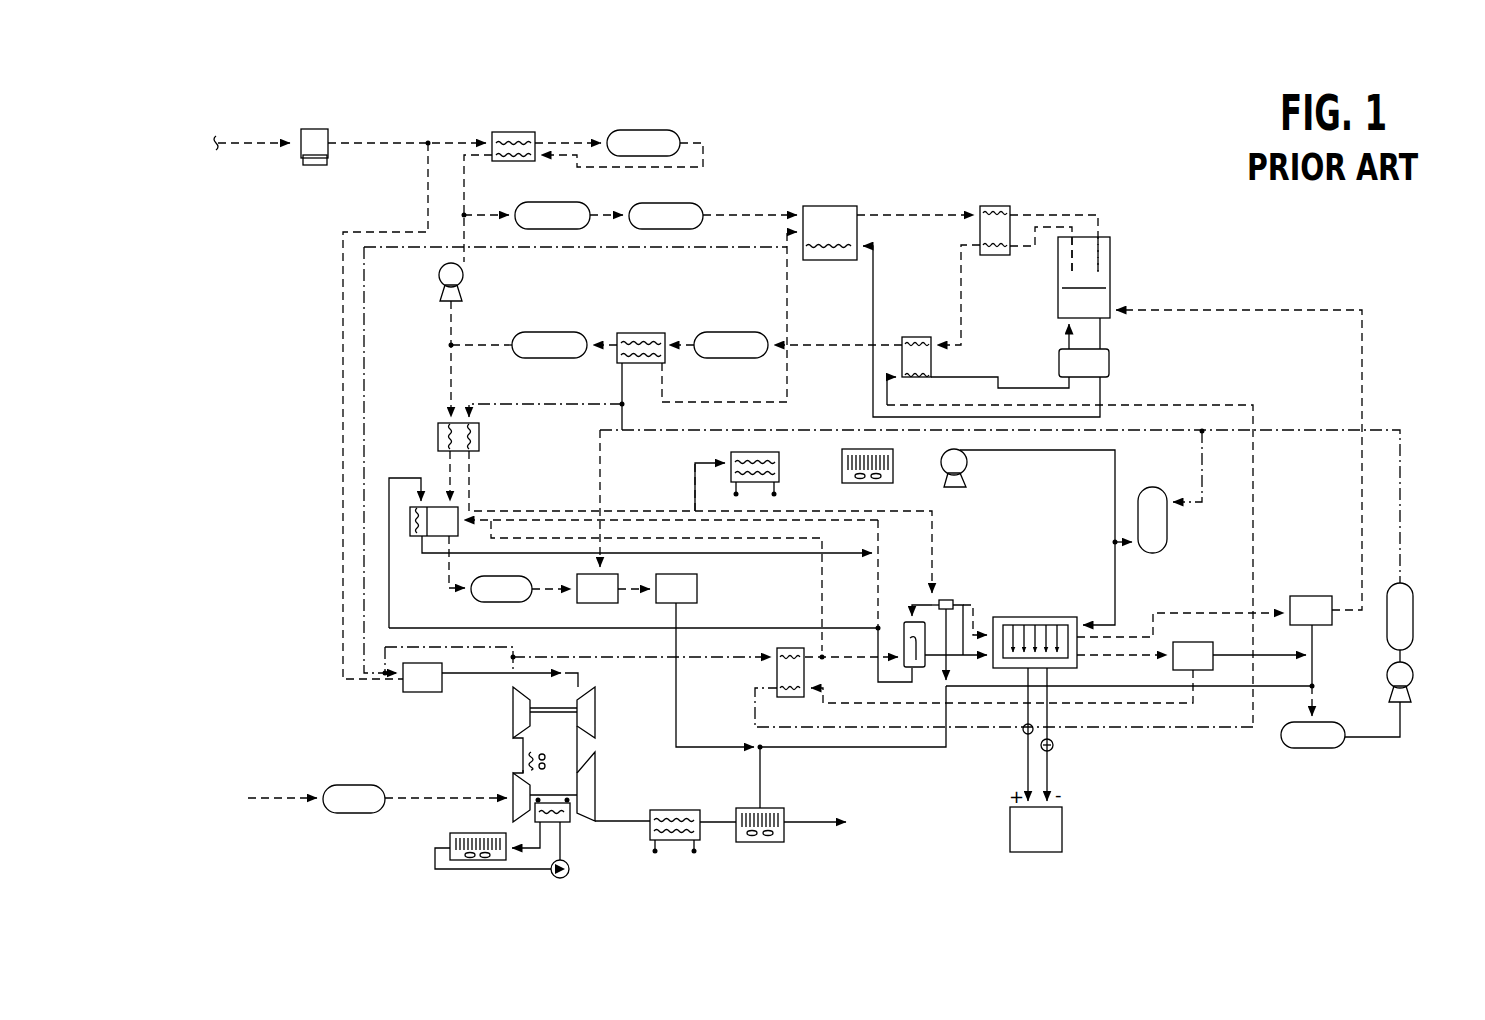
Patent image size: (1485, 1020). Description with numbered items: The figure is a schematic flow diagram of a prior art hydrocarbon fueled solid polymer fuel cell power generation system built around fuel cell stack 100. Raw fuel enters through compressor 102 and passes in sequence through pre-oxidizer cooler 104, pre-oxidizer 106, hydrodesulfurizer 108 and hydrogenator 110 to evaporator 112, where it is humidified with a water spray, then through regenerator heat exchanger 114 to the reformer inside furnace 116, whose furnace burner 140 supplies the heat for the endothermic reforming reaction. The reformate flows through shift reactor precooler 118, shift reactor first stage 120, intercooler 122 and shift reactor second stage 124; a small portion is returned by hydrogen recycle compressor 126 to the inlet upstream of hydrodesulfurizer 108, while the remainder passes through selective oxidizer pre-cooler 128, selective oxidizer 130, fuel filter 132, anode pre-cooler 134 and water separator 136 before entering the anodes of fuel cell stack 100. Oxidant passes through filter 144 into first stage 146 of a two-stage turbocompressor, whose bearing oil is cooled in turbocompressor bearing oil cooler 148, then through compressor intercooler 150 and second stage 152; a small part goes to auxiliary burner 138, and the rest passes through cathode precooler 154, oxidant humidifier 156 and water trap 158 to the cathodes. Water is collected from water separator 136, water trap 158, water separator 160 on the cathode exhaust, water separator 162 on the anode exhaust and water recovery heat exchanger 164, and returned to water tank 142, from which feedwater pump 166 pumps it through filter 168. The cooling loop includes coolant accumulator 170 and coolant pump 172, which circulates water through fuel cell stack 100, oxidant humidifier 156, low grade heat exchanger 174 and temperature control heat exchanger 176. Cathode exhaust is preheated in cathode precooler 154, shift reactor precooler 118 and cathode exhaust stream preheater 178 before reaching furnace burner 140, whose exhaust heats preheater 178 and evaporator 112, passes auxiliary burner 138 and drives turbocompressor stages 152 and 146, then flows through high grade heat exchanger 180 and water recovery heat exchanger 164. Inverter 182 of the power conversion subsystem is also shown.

The fuel cell stack 100 is at (1032, 620).
The compressor 102 is at (318, 129).
The pre-oxidizer cooler 104 is at (510, 132).
The pre-oxidizer 106 is at (660, 138).
The hydrodesulfurizer 108 is at (556, 204).
The hydrogenator 110 is at (680, 205).
The evaporator 112 is at (822, 210).
The regenerator heat exchanger 114 is at (995, 212).
The furnace 116 is at (1120, 256).
The shift reactor precooler 118 is at (915, 344).
The shift reactor first stage 120 is at (733, 337).
The intercooler 122 is at (642, 335).
The shift reactor second stage 124 is at (560, 338).
The hydrogen recycle compressor 126 is at (439, 280).
The selective oxidizer pre-cooler 128 is at (438, 424).
The selective oxidizer 130 is at (437, 506).
The fuel filter 132 is at (488, 598).
The anode pre-cooler 134 is at (602, 601).
The water separator 136 is at (689, 602).
The auxiliary burner 138 is at (410, 688).
The furnace burner 140 is at (1084, 303).
The water tank 142 is at (1316, 748).
The filter 144 is at (355, 785).
The first stage of turbocompressor 146 is at (513, 808).
The turbocompressor bearing oil cooler 148 is at (435, 850).
The compressor intercooler 150 is at (523, 761).
The second stage of turbocompressor 152 is at (530, 711).
The cathode precooler 154 is at (777, 670).
The oxidant humidifier 156 is at (915, 672).
The water trap 158 is at (948, 598).
The water separator 160 is at (1186, 645).
The water separator 162 is at (1321, 598).
The water recovery heat exchanger 164 is at (758, 842).
The feedwater pump 166 is at (1396, 678).
The filter 168 is at (1413, 600).
The coolant accumulator 170 is at (1158, 520).
The coolant pump 172 is at (957, 487).
The low grade heat exchanger 174 is at (726, 463).
The temperature control heat exchanger 176 is at (868, 483).
The cathode exhaust stream preheater 178 is at (1108, 352).
The high grade heat exchanger 180 is at (680, 812).
The inverter 182 is at (1045, 852).